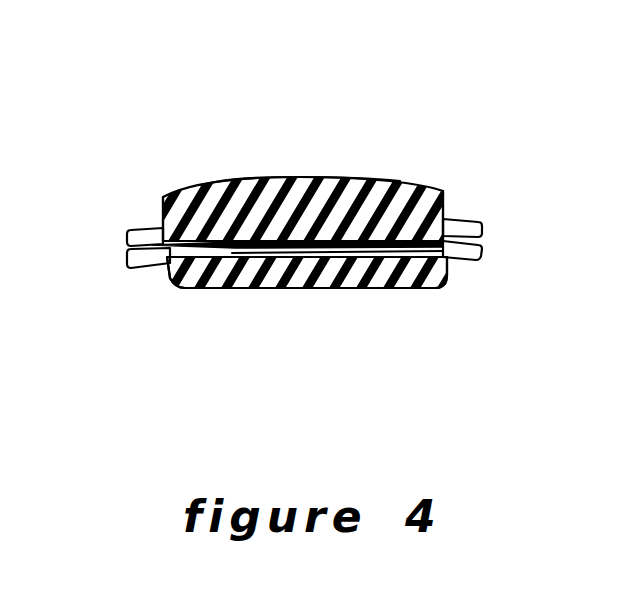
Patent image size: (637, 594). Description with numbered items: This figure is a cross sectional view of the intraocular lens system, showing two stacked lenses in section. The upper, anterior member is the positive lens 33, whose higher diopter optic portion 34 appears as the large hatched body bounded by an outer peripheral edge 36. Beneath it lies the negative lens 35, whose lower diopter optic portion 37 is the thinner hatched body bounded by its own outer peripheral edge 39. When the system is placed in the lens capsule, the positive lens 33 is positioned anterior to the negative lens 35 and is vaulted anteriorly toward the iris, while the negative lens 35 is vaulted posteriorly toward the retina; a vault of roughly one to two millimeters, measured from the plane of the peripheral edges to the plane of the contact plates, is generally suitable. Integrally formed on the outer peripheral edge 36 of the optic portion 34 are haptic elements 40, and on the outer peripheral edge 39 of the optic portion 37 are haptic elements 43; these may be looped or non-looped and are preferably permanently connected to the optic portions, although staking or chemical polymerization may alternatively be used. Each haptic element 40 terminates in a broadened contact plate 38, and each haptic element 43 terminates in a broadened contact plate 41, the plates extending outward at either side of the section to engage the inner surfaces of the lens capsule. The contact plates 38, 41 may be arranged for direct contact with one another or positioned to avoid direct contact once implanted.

The positive lens 33 is at (372, 178).
The higher diopter optic portion 34 is at (232, 179).
The negative lens 35 is at (422, 289).
The outer peripheral edge 36 is at (462, 217).
The lower diopter optic portion 37 is at (310, 289).
The contact plate 38 is at (147, 228).
The outer peripheral edge 39 is at (187, 291).
The haptic element 40 is at (152, 228).
The contact plate 41 is at (127, 262).
The haptic element 43 is at (145, 265).